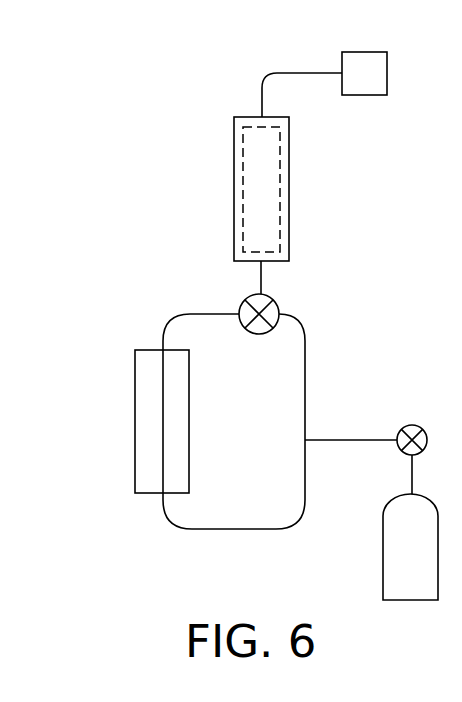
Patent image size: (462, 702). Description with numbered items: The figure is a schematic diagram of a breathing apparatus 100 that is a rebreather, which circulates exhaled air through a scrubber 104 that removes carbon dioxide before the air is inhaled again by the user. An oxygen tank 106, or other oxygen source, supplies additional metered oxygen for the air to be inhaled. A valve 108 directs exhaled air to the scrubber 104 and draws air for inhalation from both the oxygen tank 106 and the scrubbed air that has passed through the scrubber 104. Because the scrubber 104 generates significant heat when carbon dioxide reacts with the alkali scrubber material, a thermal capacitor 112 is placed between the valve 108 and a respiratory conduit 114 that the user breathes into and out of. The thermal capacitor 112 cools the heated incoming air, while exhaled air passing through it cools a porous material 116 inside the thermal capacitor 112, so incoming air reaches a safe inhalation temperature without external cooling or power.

The breathing apparatus 100 is at (195, 90).
The scrubber 104 is at (135, 430).
The oxygen tank 106 is at (383, 539).
The valve 108 is at (277, 305).
The thermal capacitor 112 is at (289, 188).
The respiratory conduit 114 is at (362, 95).
The porous material 116 is at (233, 188).